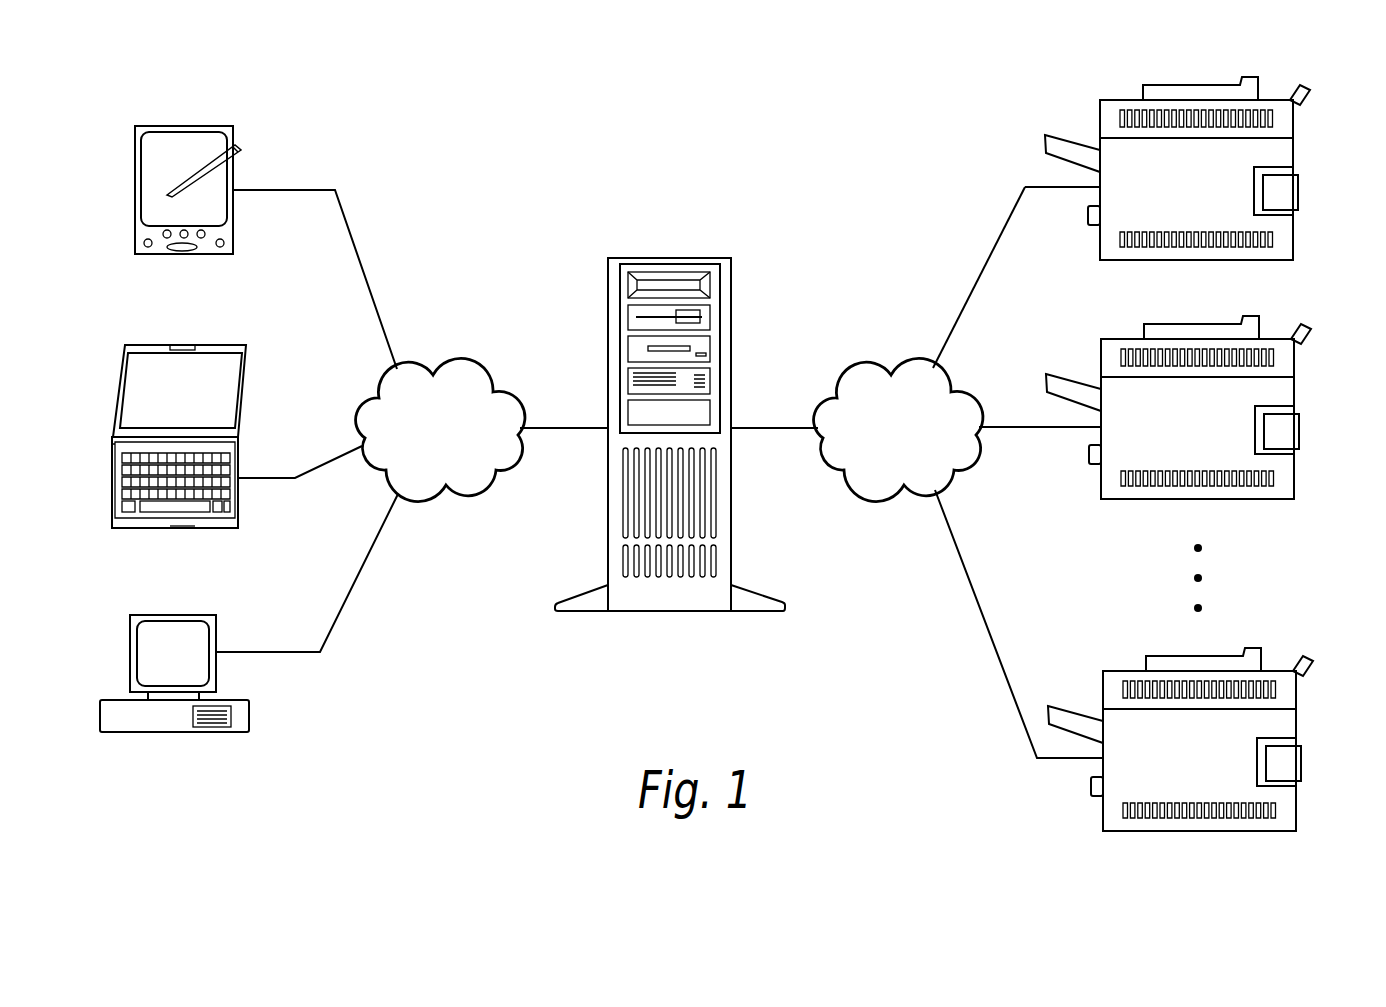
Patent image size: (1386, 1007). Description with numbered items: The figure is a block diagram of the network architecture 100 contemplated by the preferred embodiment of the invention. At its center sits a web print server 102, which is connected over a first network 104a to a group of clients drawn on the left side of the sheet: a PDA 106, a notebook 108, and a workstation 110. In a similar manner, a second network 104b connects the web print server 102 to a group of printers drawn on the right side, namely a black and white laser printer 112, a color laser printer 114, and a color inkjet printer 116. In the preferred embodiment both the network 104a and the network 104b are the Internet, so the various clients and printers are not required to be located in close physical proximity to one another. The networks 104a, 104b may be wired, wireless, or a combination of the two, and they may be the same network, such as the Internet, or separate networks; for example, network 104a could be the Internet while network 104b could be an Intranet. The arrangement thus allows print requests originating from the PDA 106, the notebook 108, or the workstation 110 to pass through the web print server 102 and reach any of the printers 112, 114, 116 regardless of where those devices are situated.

The network architecture 100 is at (441, 148).
The web print server 102 is at (675, 258).
The network 104a is at (478, 370).
The network 104b is at (857, 368).
The PDA 106 is at (135, 183).
The notebook 108 is at (124, 388).
The workstation 110 is at (130, 657).
The black and white laser printer 112 is at (1296, 153).
The color laser printer 114 is at (1297, 392).
The color inkjet printer 116 is at (1299, 724).